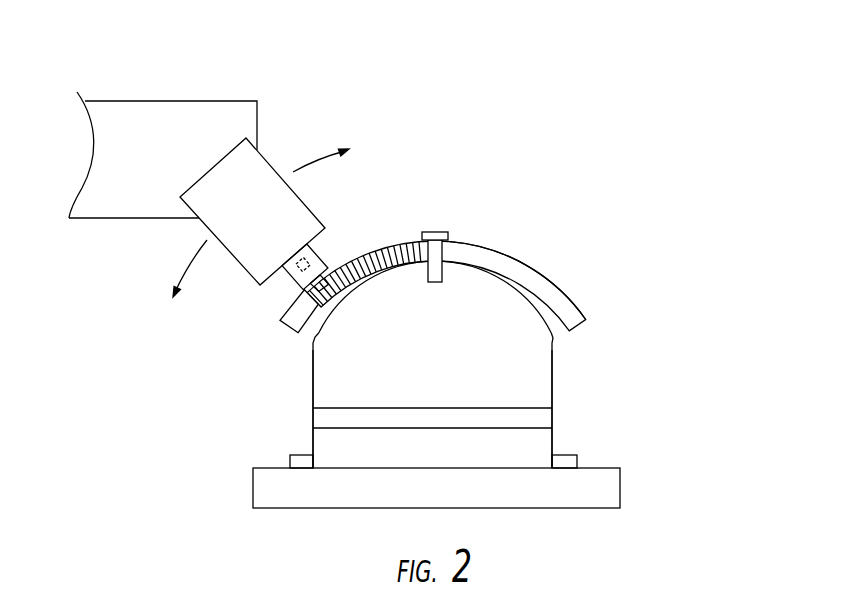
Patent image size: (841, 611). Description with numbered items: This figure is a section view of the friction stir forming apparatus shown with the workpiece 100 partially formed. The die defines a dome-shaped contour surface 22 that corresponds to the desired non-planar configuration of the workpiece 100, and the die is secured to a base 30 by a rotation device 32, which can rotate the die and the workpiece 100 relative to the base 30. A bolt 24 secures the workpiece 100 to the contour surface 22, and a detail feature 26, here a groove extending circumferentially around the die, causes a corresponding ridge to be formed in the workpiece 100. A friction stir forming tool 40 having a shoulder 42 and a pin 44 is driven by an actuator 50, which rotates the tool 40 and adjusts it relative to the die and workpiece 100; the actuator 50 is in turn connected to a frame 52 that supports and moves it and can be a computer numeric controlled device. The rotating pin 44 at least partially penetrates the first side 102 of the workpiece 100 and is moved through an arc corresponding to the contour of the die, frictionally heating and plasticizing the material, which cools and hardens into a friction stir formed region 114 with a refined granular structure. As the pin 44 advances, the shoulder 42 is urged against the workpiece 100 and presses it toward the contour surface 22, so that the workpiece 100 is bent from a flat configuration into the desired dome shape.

The frame 52 is at (164, 100).
The actuator 50 is at (302, 202).
The friction stir forming tool 40 is at (342, 235).
The shoulder 42 is at (362, 258).
The pin 44 is at (288, 311).
The bolt 24 is at (448, 238).
The detail feature 26 is at (550, 335).
The contour surface 22 is at (552, 377).
The rotation device 32 is at (552, 420).
The base 30 is at (620, 483).
The workpiece 100 is at (508, 267).
The first side 102 is at (548, 282).
The friction stir formed region 114 is at (400, 246).